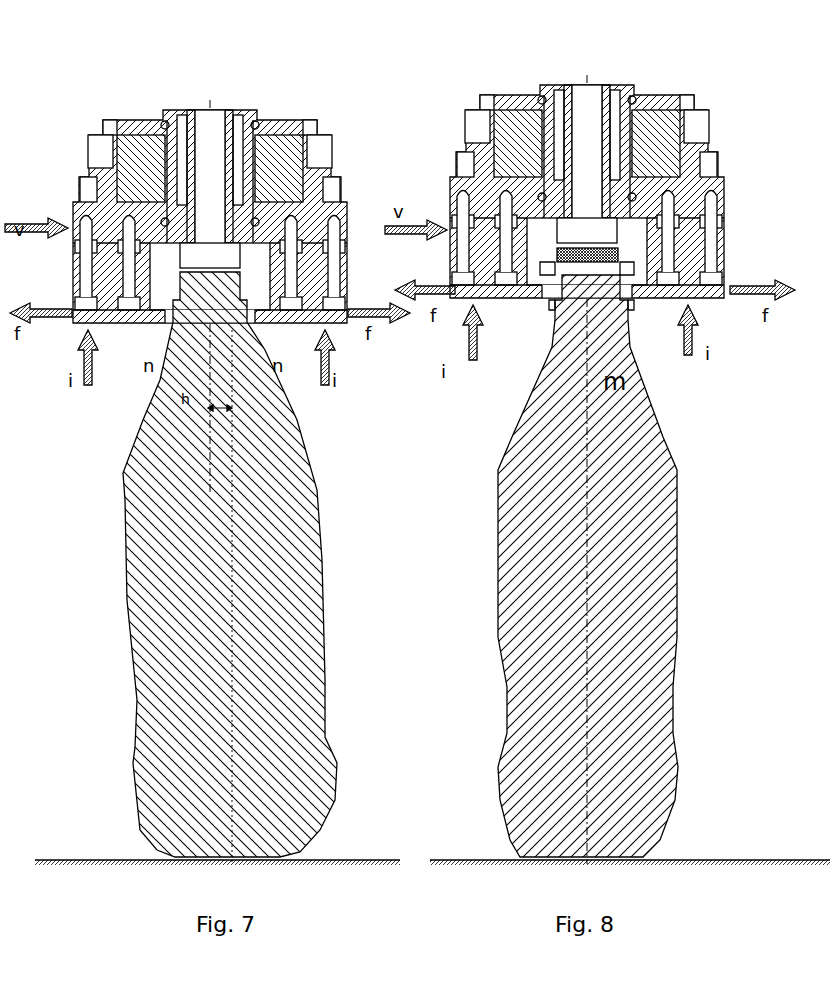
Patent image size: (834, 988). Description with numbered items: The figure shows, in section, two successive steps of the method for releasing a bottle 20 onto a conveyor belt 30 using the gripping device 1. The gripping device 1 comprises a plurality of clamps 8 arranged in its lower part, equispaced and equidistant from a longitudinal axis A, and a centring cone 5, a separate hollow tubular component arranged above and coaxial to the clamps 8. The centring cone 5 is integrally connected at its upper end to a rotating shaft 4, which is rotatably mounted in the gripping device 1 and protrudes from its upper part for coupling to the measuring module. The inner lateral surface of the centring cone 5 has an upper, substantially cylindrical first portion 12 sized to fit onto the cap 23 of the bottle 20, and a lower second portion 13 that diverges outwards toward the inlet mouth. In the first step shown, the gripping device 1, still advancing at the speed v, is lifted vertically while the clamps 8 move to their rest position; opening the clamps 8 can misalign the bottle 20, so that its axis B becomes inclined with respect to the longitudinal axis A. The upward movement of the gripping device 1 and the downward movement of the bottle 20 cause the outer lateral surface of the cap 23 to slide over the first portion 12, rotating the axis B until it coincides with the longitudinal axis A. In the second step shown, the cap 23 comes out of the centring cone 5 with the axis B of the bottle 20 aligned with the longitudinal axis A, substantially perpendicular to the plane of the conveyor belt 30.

In FIG. 7, the gripping device 1 is at (76, 108).
In FIG. 8, the gripping device 1 is at (446, 94).
In FIG. 7, the rotating shaft 4 is at (197, 150).
In FIG. 8, the rotating shaft 4 is at (565, 138).
In FIG. 7, the longitudinal axis A is at (217, 140).
In FIG. 8, the longitudinal axis A is at (597, 130).
In FIG. 7, the centring cone 5 is at (243, 262).
In FIG. 8, the centring cone 5 is at (623, 235).
In FIG. 7, the clamps 8 is at (147, 323).
In FIG. 8, the clamps 8 is at (708, 295).
In FIG. 8, the first portion 12 is at (620, 252).
In FIG. 8, the second portion 13 is at (620, 272).
In FIG. 7, the bottle 20 is at (330, 487).
In FIG. 8, the bottle 20 is at (683, 451).
In FIG. 8, the cap 23 is at (558, 296).
In FIG. 7, the conveyor belt 30 is at (120, 858).
In FIG. 8, the conveyor belt 30 is at (500, 858).
In FIG. 7, the axis B is at (232, 565).
In FIG. 8, the axis B is at (587, 548).